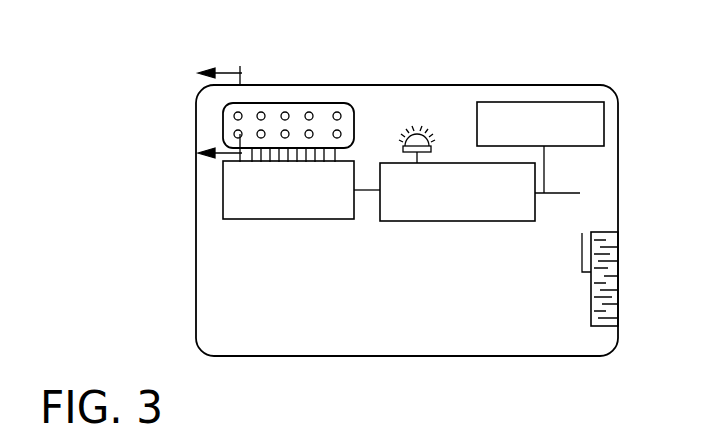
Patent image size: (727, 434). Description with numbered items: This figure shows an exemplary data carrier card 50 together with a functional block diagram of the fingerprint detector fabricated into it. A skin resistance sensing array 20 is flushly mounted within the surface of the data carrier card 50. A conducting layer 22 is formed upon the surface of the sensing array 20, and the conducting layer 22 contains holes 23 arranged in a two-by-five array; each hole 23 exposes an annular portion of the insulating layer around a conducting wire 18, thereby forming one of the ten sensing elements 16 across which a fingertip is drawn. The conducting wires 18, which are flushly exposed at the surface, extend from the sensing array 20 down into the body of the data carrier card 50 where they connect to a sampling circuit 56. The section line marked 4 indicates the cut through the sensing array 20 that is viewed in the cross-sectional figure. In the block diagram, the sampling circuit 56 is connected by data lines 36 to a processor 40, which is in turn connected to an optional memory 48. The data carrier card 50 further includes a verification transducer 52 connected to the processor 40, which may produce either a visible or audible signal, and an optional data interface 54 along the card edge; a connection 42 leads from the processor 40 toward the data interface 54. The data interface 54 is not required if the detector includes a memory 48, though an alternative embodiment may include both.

The section line 4- 4 is at (204, 114).
The sensing elements 16 is at (338, 110).
The conducting wires 18 is at (230, 156).
The skin resistance sensing array 20 is at (259, 103).
The conducting layer 22 is at (223, 120).
The holes 23 is at (287, 104).
The data lines 36 is at (367, 193).
The processor 40 is at (440, 222).
The bus line 42 is at (557, 195).
The memory 48 is at (522, 101).
The data carrier card 50 is at (423, 76).
The verification transducer 52 is at (418, 128).
The data interface 54 is at (618, 271).
The sampling circuit 56 is at (270, 220).